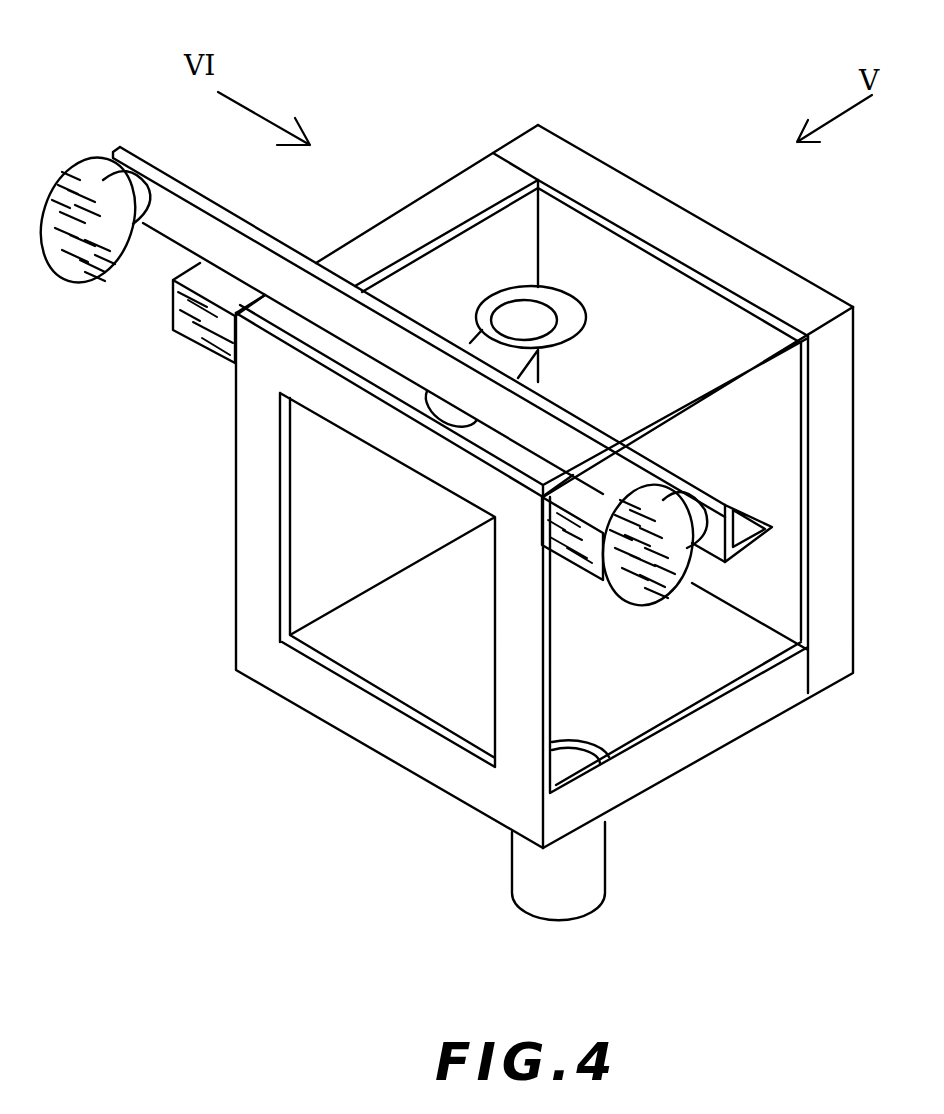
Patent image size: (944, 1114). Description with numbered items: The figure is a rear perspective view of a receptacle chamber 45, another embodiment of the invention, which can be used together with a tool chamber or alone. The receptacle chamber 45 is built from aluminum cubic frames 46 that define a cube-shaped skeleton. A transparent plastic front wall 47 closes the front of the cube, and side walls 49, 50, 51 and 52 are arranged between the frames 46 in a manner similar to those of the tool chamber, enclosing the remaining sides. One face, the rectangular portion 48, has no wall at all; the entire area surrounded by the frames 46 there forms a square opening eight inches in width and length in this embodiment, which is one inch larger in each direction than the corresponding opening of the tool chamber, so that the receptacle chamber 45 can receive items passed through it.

The receptacle chamber 45 is at (713, 75).
The cubic frames 46 is at (417, 197).
The front wall 47 is at (628, 300).
The rectangular portion 48 is at (262, 500).
The side wall 49 is at (682, 303).
The side wall 50 is at (447, 288).
The side wall 51 is at (632, 695).
The side wall 52 is at (762, 463).